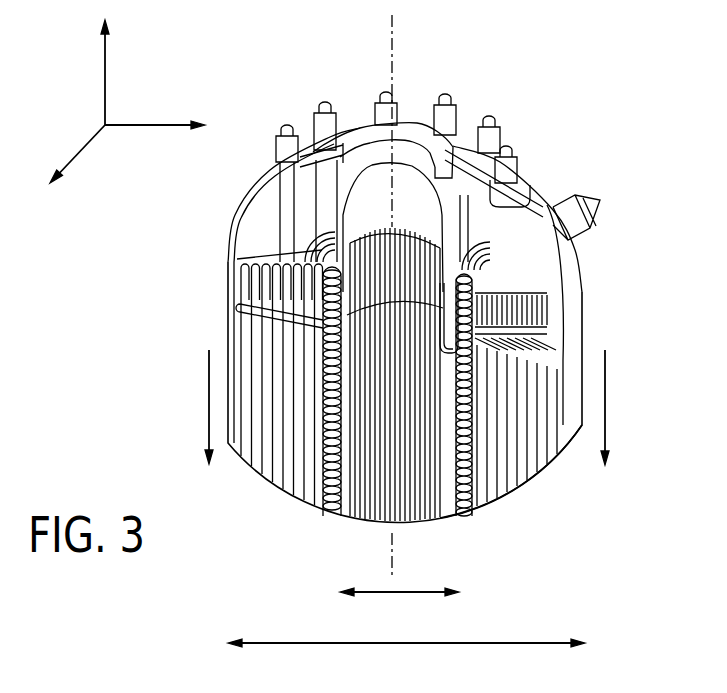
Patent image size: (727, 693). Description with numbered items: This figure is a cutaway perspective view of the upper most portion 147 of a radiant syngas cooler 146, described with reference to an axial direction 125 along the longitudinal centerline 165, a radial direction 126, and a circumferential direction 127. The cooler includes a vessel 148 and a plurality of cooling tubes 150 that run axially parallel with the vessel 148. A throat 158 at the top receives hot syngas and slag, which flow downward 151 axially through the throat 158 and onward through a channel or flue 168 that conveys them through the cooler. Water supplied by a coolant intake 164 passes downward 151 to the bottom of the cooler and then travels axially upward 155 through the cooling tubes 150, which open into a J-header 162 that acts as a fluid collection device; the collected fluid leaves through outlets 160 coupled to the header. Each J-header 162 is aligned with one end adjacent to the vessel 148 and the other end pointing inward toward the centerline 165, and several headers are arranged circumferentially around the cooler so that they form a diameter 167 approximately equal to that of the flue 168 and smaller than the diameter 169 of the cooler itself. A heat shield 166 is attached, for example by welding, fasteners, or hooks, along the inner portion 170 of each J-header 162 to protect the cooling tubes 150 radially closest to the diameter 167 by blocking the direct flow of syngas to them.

The axial direction or axis 125 is at (105, 80).
The radial direction or axis 126 is at (148, 127).
The circumferential direction or axis 127 is at (82, 148).
The radiant syngas cooler 146 is at (490, 28).
The upper most portion 147 is at (236, 256).
The vessel 148 is at (578, 273).
The cooling tubes 150 is at (254, 334).
The downward flow direction 151 is at (208, 398).
The upward flow direction 155 is at (270, 442).
The throat 158 is at (403, 150).
The outlets 160 is at (503, 158).
The J-header 162 is at (558, 290).
The coolant intake 164 is at (598, 202).
The centerline 165 is at (393, 538).
The heat shield 166 is at (508, 480).
The diameter D1 167 is at (400, 592).
The flue 168 is at (428, 522).
The diameter D2 169 is at (347, 642).
The inner portion 170 is at (284, 244).